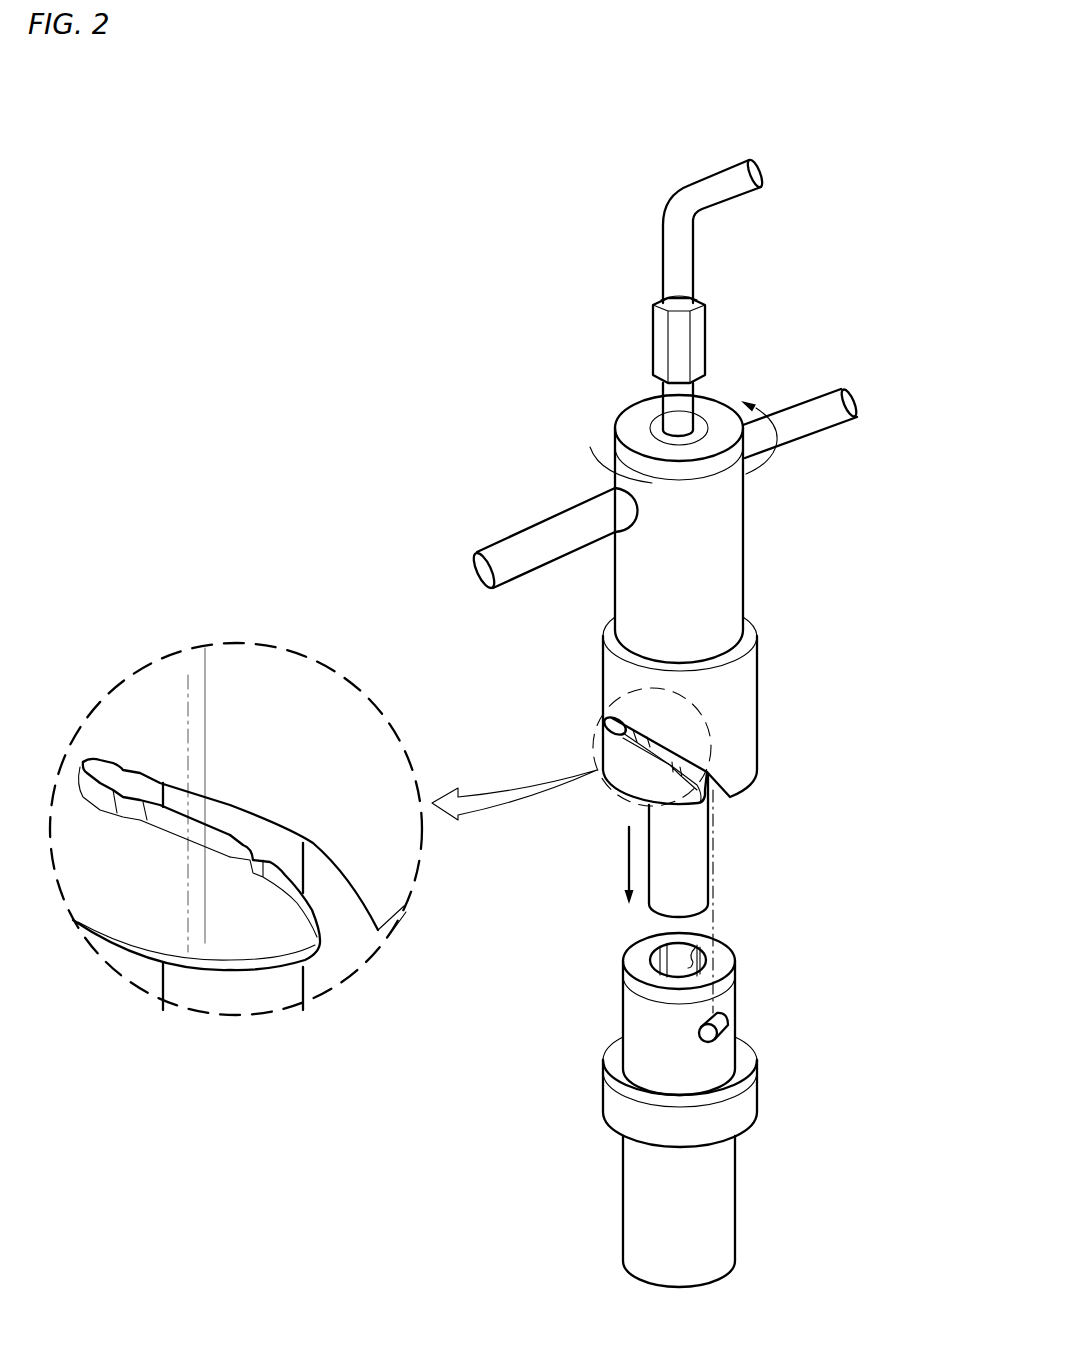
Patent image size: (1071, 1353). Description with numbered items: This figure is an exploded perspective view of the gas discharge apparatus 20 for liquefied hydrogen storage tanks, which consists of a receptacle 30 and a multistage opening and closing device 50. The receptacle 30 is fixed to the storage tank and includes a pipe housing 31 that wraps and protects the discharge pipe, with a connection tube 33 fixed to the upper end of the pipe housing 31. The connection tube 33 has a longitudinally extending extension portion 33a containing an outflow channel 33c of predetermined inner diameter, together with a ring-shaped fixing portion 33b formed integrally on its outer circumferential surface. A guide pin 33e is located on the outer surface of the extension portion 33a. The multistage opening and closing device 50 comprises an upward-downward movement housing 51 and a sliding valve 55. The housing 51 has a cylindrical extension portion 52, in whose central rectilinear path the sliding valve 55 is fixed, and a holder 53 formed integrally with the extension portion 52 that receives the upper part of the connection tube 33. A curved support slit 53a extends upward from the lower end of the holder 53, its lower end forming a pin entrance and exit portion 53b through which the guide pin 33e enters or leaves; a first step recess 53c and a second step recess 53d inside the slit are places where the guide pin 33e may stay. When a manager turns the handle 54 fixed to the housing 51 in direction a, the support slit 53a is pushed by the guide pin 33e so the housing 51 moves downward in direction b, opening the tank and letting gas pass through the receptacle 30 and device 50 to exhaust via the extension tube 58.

The gas discharge apparatus 20 is at (450, 262).
The receptacle 30 is at (815, 1154).
The pipe housing 31 is at (727, 1232).
The connection tube 33 is at (513, 980).
The extension portion 33a is at (637, 1016).
The fixing portion 33b is at (615, 1103).
The outflow channel 33c is at (700, 960).
The guide pin 33e is at (713, 1037).
The multistage opening and closing device 50 is at (852, 597).
The upward-downward movement housing 51 is at (522, 615).
The extension portion 52 is at (627, 583).
The holder 53 is at (615, 667).
The support slit 53a is at (729, 792).
The pin entrance and exit portion 53b is at (340, 928).
The first step recess 53c is at (273, 868).
The second step recess 53d is at (128, 808).
The handle 54 is at (818, 410).
The sliding valve 55 is at (728, 864).
The extension tube 58 is at (715, 188).